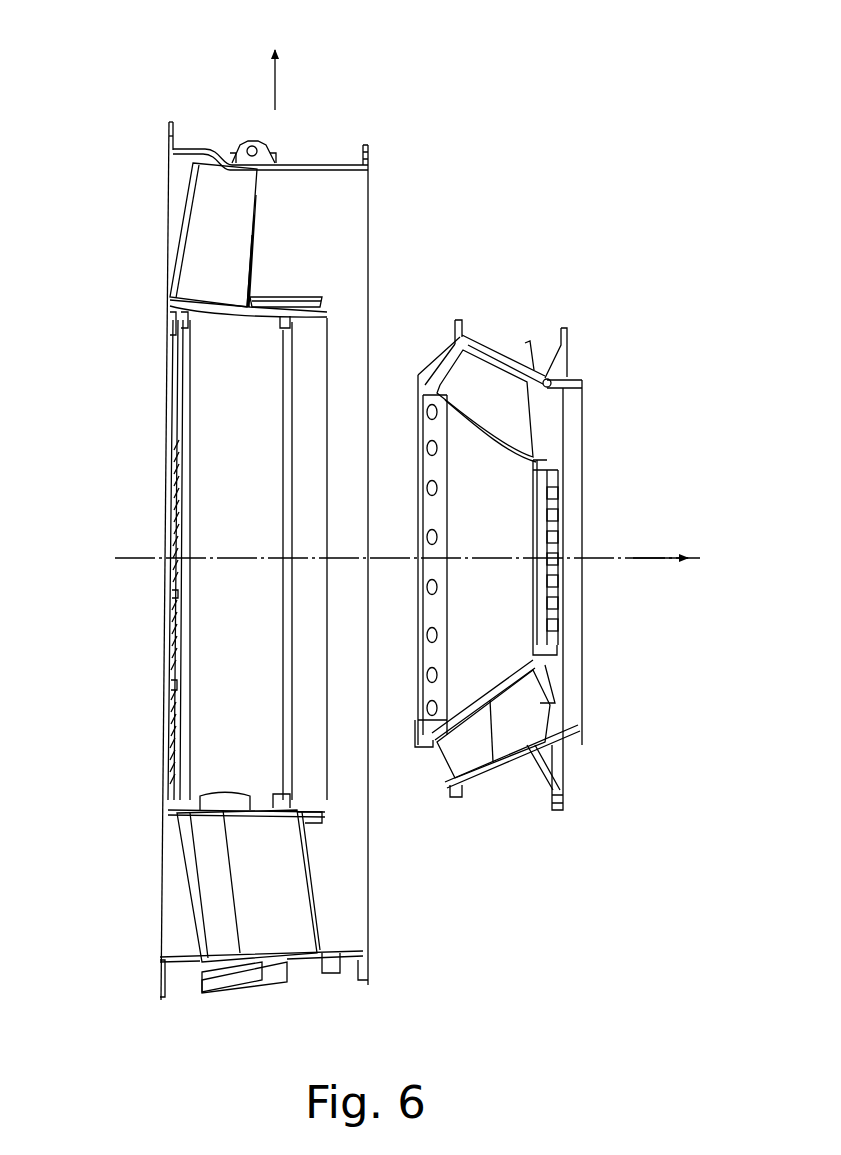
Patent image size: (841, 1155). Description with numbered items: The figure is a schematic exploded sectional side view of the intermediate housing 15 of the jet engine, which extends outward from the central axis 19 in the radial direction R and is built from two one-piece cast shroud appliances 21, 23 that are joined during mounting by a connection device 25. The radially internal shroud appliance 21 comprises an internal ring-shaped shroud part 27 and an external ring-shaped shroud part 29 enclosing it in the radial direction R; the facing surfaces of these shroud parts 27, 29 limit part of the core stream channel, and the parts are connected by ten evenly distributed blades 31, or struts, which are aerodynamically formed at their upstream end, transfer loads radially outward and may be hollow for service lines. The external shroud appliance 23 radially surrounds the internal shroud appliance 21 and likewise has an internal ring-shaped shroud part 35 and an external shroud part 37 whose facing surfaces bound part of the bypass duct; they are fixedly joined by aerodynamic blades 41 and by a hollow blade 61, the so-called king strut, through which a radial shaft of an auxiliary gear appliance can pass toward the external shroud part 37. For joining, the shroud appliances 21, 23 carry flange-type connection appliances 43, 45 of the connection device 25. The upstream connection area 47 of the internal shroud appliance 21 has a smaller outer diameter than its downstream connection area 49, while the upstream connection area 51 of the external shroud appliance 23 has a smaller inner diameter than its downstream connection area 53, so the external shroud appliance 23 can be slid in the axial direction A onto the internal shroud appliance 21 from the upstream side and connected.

The intermediate housing 15 is at (152, 74).
The central axis 19 is at (597, 558).
The internal shroud appliance 21 is at (541, 566).
The external shroud appliance 23 is at (278, 555).
The connection device 25 is at (576, 341).
The internal ring-shaped shroud part 27 is at (522, 682).
The external ring-shaped shroud part 29 is at (533, 760).
The blades 31 is at (549, 385).
The internal ring-shaped shroud part 35 is at (373, 283).
The external shroud part 37 is at (328, 165).
The aerodynamic blades 41 is at (218, 243).
The connection appliance 43 is at (166, 320).
The connection appliance 45 is at (520, 405).
The connection area 47 is at (462, 797).
The connection area 49 is at (567, 772).
The connection area 51 is at (177, 795).
The connection area 53 is at (293, 794).
The blade 61 is at (280, 920).
The radial direction R is at (268, 68).
The axial direction A is at (660, 560).